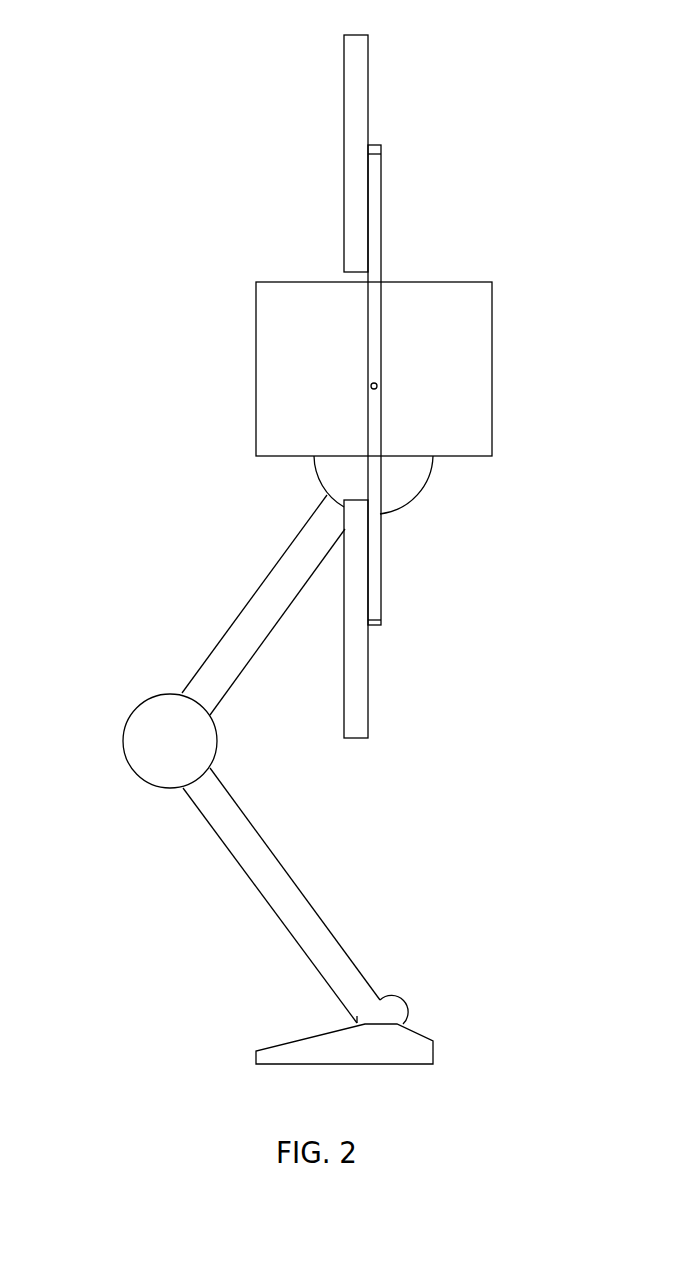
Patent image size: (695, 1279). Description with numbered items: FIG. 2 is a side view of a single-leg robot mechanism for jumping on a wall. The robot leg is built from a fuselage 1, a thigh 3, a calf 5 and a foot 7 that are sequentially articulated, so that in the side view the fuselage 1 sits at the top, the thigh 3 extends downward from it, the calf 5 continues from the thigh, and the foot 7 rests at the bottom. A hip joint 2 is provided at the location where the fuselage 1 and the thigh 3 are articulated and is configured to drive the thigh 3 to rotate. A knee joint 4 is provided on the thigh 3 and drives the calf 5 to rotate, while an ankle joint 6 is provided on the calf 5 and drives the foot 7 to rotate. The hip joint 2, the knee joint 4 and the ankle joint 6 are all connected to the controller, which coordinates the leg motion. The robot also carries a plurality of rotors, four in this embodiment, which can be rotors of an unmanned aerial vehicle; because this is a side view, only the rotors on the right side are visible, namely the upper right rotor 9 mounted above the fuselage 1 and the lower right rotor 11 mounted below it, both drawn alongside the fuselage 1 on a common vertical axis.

The fuselage 1 is at (280, 333).
The hip joint 2 is at (446, 490).
The thigh 3 is at (196, 598).
The knee joint 4 is at (118, 703).
The calf 5 is at (226, 895).
The ankle joint 6 is at (427, 1000).
The foot 7 is at (258, 1058).
The upper right rotor 9 is at (398, 131).
The lower right rotor 11 is at (392, 653).